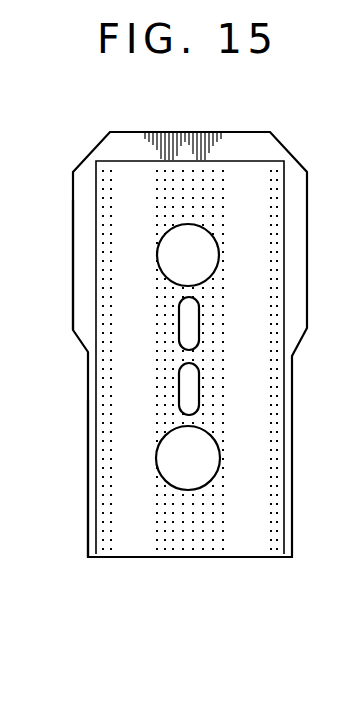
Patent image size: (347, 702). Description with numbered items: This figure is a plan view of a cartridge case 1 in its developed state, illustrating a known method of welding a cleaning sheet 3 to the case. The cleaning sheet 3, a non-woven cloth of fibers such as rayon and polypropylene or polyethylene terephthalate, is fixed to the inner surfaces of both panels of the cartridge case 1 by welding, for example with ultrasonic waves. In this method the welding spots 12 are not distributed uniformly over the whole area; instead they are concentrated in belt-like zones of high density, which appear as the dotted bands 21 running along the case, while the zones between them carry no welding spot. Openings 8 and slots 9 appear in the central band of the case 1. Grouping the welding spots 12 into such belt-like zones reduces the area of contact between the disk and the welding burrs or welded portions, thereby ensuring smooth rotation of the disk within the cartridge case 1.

The cartridge case 1 is at (88, 155).
The perforated region 21 is at (138, 207).
The cleaning sheet 3 is at (96, 283).
The welding spots 12 is at (103, 480).
The circular opening 8 is at (210, 245).
The slot 9 is at (192, 325).